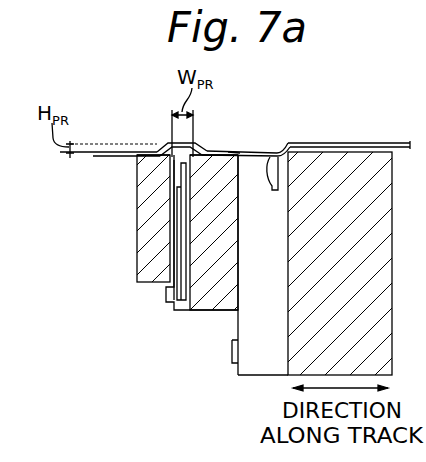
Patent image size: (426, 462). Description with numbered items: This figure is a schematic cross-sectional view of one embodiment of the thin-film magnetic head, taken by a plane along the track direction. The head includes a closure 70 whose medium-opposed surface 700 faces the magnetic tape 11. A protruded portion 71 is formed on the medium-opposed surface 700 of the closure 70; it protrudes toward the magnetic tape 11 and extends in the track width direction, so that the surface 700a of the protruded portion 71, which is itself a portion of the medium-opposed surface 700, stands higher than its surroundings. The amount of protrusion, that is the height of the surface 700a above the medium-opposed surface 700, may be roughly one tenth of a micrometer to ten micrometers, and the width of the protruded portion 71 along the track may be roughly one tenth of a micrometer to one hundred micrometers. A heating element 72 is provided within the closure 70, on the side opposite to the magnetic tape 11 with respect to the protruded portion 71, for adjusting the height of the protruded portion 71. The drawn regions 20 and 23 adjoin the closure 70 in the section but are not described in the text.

The medium-opposed surface 700 is at (164, 146).
The surface of the protruded portion 700a is at (235, 172).
The closure 70 is at (217, 167).
The protruded portion 71 is at (176, 164).
The heating element 72 is at (177, 173).
The gap region 23 is at (247, 177).
The slider substrate 20 is at (323, 162).
The magnetic tape 11 is at (363, 148).